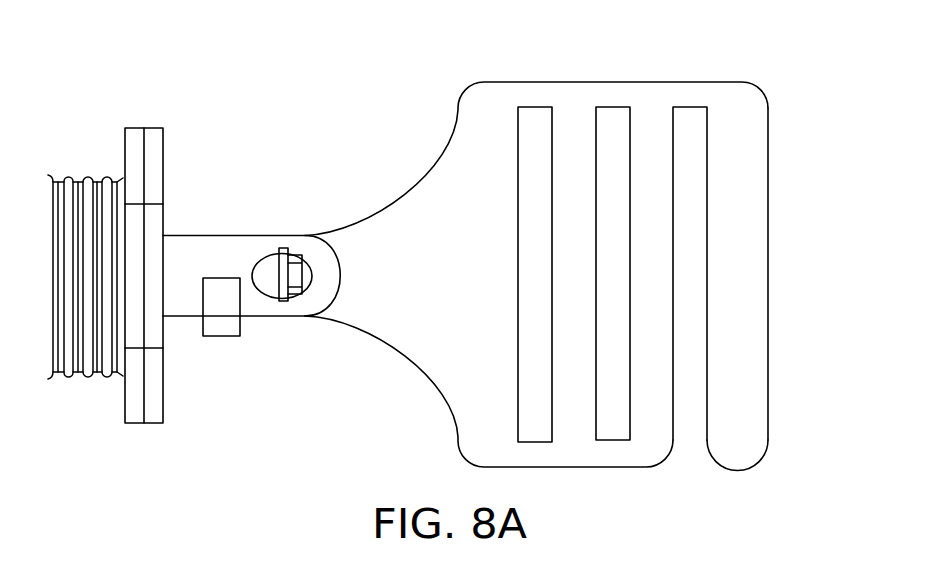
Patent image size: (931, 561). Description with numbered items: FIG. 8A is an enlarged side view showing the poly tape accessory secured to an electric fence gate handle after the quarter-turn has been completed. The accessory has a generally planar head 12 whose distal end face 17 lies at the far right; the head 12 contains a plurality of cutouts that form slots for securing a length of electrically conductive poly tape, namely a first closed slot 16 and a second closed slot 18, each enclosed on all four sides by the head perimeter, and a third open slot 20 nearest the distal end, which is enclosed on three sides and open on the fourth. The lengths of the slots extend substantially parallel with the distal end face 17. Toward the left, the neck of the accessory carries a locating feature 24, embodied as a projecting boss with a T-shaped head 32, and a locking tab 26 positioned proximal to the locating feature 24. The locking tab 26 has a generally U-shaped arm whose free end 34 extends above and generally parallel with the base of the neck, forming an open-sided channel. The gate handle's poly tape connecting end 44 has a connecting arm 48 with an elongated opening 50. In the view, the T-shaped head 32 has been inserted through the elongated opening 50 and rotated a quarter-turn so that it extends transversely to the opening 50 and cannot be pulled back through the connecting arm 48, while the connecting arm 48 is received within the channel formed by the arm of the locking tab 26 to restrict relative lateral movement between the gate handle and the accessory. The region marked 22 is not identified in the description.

The head 12 is at (766, 90).
The first closed slot 16 is at (528, 108).
The distal end face 17 is at (769, 231).
The second closed slot 18 is at (605, 108).
The third open slot 20 is at (682, 108).
The bottom wall 22 is at (678, 465).
The locating feature 24 is at (297, 241).
The locking tab 26 is at (227, 350).
The T-shaped head 32 is at (282, 304).
The free end 34 is at (222, 278).
The poly tape connecting end 44 is at (150, 128).
The connecting arm 48 is at (183, 320).
The elongated opening 50 is at (258, 266).